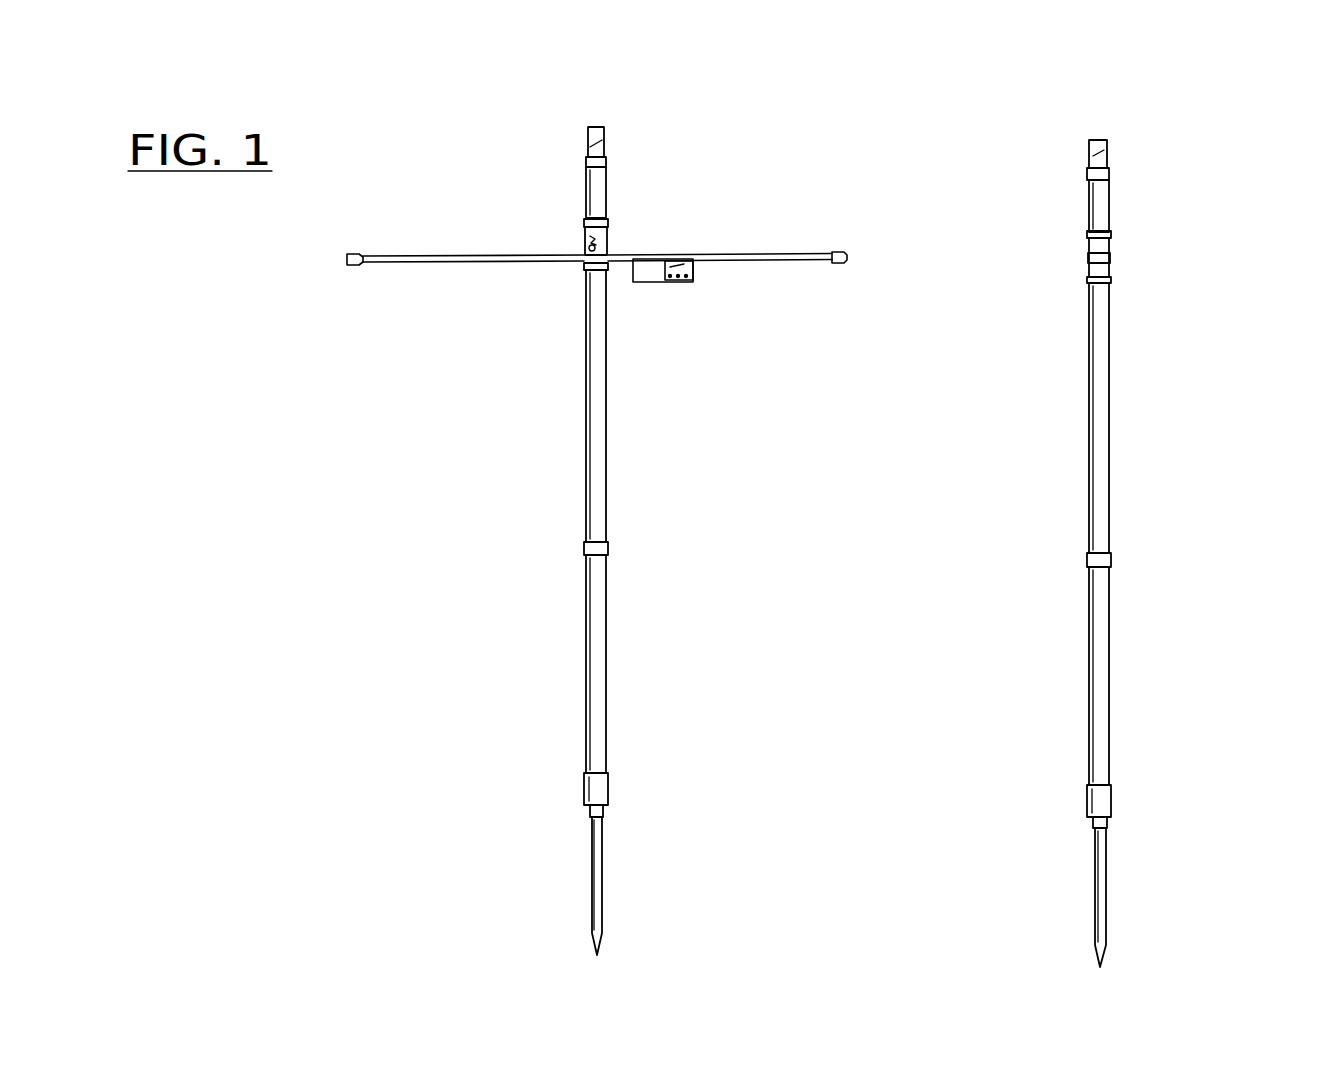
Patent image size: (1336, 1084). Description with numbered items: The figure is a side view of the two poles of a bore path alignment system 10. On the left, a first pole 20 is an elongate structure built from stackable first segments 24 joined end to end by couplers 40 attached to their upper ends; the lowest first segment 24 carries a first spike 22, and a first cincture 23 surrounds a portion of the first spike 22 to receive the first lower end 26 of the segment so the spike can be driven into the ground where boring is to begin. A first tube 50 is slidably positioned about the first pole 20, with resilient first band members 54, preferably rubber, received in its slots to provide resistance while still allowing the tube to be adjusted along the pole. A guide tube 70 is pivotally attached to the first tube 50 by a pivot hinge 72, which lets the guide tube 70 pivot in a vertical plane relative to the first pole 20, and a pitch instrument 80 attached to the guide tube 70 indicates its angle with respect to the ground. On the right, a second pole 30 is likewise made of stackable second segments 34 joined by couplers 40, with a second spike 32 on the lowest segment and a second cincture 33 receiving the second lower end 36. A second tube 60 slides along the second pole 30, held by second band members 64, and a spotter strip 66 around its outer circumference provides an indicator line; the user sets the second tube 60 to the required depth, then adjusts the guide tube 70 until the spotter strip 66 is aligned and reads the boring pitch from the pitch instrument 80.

The bore path alignment system 10 is at (1180, 224).
The first pole 20 is at (606, 664).
The first spike 22 is at (603, 874).
The first cincture 23 is at (585, 806).
The first segment 24 is at (600, 442).
The first lower end 26 is at (604, 790).
The second pole 30 is at (1109, 675).
The second spike 32 is at (1106, 890).
The second cincture 33 is at (1105, 825).
The second segment 34 is at (1095, 427).
The second lower end 36 is at (1103, 800).
The coupler 40 is at (598, 153).
The first tube 50 is at (585, 240).
The first band member 54 is at (584, 224).
The second tube 60 is at (1088, 247).
The second band member 64 is at (1109, 236).
The spotter strip 66 is at (1108, 257).
The guide tube 70 is at (838, 254).
The pivot hinge 72 is at (613, 255).
The pitch instrument 80 is at (652, 272).